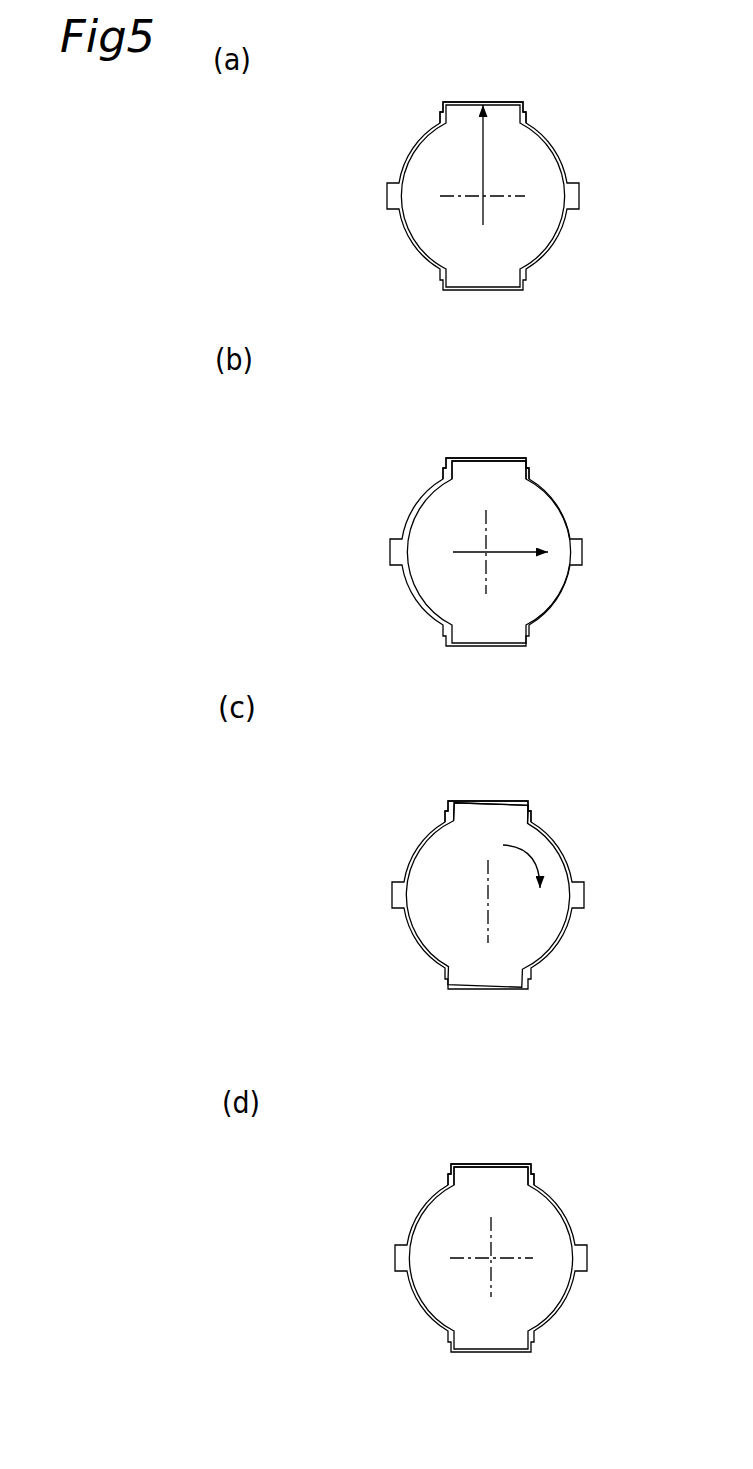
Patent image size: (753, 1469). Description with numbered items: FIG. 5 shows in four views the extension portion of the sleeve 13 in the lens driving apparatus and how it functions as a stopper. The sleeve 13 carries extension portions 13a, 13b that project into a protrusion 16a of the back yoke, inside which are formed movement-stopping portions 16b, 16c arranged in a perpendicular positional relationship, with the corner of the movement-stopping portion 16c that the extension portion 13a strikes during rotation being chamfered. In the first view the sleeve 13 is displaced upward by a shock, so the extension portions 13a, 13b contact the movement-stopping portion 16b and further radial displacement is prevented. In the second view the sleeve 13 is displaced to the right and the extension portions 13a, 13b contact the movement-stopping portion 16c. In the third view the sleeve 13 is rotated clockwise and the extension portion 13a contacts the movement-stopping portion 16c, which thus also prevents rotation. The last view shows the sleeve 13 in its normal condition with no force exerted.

The sleeve 13 is at (499, 727).
The extension portion 13a is at (393, 646).
The extension portion 13b is at (414, 646).
The protrusion 16a is at (515, 851).
The movement-stopping portion 16b is at (496, 613).
The movement-stopping portion 16c is at (553, 790).